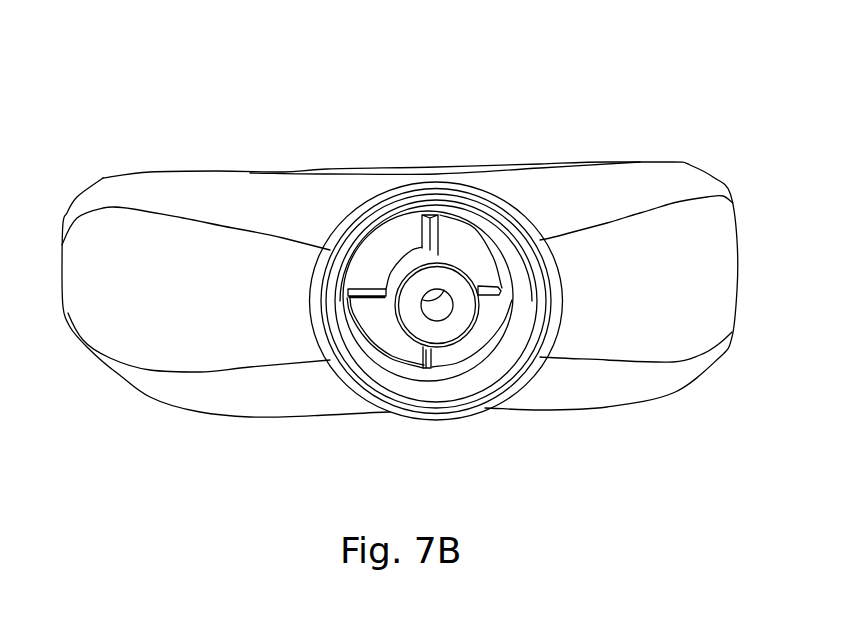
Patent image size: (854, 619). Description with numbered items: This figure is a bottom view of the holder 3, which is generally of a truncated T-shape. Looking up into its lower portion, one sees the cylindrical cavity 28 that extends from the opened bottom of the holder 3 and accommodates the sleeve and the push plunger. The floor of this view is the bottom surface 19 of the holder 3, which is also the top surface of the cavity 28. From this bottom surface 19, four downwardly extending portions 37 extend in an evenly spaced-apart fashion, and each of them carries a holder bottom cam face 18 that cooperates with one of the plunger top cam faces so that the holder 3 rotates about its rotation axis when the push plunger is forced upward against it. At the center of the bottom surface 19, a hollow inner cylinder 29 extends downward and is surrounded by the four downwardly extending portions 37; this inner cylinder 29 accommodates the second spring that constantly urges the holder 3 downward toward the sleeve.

The holder 3 is at (247, 205).
The holder bottom cam face 18 is at (470, 257).
The bottom surface 19 is at (380, 357).
The cylindrical cavity 28 is at (490, 360).
The hollow inner cylinder 29 is at (437, 283).
The downwardly extending portion 37 is at (385, 252).